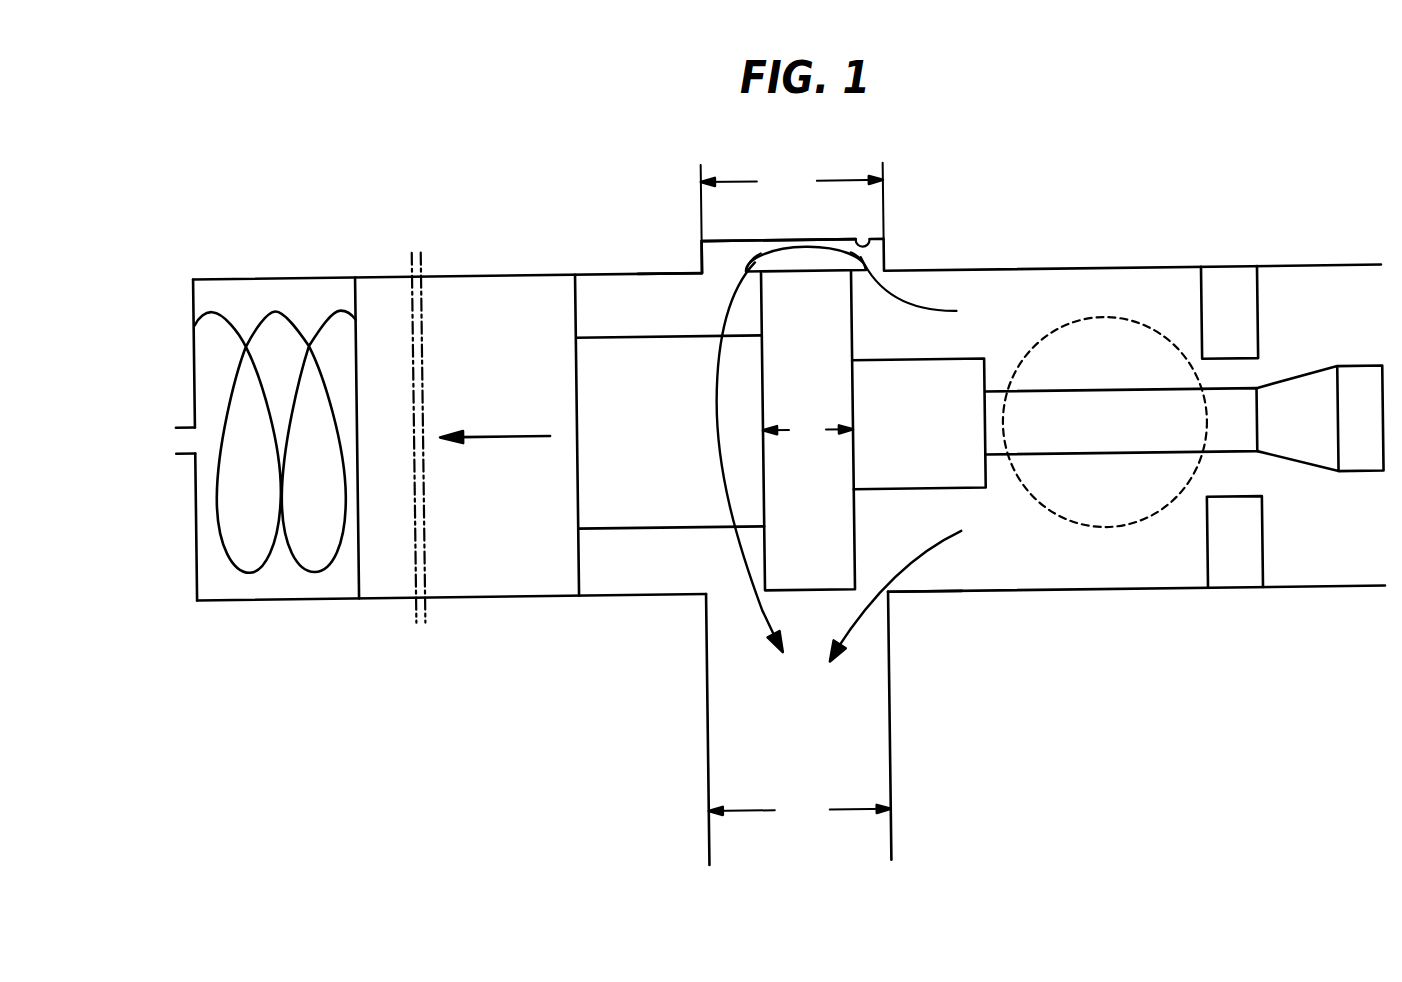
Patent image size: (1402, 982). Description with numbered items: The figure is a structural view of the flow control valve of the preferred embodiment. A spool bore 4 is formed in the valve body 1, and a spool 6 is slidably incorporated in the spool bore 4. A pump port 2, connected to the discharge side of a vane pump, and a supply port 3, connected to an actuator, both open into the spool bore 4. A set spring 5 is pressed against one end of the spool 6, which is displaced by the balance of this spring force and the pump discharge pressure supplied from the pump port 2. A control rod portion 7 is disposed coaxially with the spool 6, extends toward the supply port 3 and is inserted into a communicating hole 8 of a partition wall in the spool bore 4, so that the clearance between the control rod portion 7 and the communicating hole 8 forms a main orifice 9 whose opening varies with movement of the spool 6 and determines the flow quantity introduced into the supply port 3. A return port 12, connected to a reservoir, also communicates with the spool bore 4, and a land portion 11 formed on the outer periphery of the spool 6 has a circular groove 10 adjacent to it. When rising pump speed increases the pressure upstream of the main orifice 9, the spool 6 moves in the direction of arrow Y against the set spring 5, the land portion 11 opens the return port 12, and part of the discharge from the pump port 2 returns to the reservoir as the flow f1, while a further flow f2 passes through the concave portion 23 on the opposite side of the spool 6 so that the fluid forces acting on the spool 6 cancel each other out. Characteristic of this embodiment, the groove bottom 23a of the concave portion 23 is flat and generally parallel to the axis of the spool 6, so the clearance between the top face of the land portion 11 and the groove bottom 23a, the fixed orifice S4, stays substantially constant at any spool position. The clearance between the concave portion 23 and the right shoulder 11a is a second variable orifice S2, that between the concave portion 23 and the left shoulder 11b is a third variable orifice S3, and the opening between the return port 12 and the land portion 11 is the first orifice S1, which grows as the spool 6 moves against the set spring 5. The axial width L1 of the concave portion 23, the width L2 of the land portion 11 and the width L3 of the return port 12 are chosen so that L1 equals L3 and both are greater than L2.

The valve body 1 is at (923, 800).
The pump port 2 is at (1133, 526).
The supply port 3 is at (173, 432).
The spool bore 4 is at (480, 588).
The set spring 5 is at (287, 297).
The spool 6 is at (493, 333).
The control rod portion 7 is at (1232, 419).
The communicating hole 8 is at (1233, 500).
The main orifice 9 is at (1260, 485).
The circular groove 10 is at (578, 566).
The land portion 11 is at (807, 577).
The right shoulder 11a is at (872, 268).
The left shoulder 11b is at (757, 262).
The return port 12 is at (722, 762).
The concave portion 23 is at (702, 238).
The groove bottom 23a is at (864, 240).
The first orifice S1 is at (888, 595).
The second variable orifice S2 is at (878, 272).
The third variable orifice S3 is at (718, 280).
The fixed orifice S4 is at (805, 261).
The width of the concave portion L1 is at (792, 202).
The width of the land portion L2 is at (808, 430).
The width of the return port L3 is at (800, 810).
The arrow Y is at (495, 422).
The flow f1 is at (853, 627).
The flow f2 is at (752, 604).